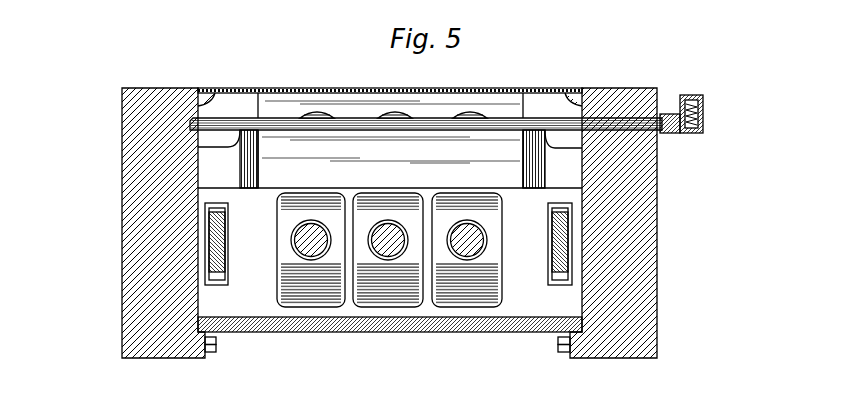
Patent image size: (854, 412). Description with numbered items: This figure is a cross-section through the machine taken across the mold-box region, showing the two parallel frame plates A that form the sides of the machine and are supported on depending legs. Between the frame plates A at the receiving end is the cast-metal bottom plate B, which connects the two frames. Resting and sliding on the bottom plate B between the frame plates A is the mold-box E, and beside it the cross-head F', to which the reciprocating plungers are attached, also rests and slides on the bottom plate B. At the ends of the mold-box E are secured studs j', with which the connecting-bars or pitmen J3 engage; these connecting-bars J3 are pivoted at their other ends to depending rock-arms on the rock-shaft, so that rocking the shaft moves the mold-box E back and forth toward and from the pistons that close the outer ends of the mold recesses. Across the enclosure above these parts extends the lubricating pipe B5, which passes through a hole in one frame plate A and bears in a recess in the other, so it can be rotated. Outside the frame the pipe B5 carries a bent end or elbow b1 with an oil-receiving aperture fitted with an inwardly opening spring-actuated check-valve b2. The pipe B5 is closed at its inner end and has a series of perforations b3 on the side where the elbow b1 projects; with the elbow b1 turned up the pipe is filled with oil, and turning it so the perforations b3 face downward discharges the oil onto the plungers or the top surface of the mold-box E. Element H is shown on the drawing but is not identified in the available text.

The frame plates A is at (122, 272).
The bottom plate B is at (552, 330).
The lubricating pipe B5 is at (294, 131).
The bent end or elbow b1 is at (703, 118).
The check-valve b2 is at (703, 98).
The perforations b3 is at (318, 117).
The mold-box E is at (517, 305).
The cross-head F' is at (389, 214).
The cover H is at (517, 88).
The connecting-bars or pitmen J3 is at (228, 222).
The studs j' is at (388, 249).